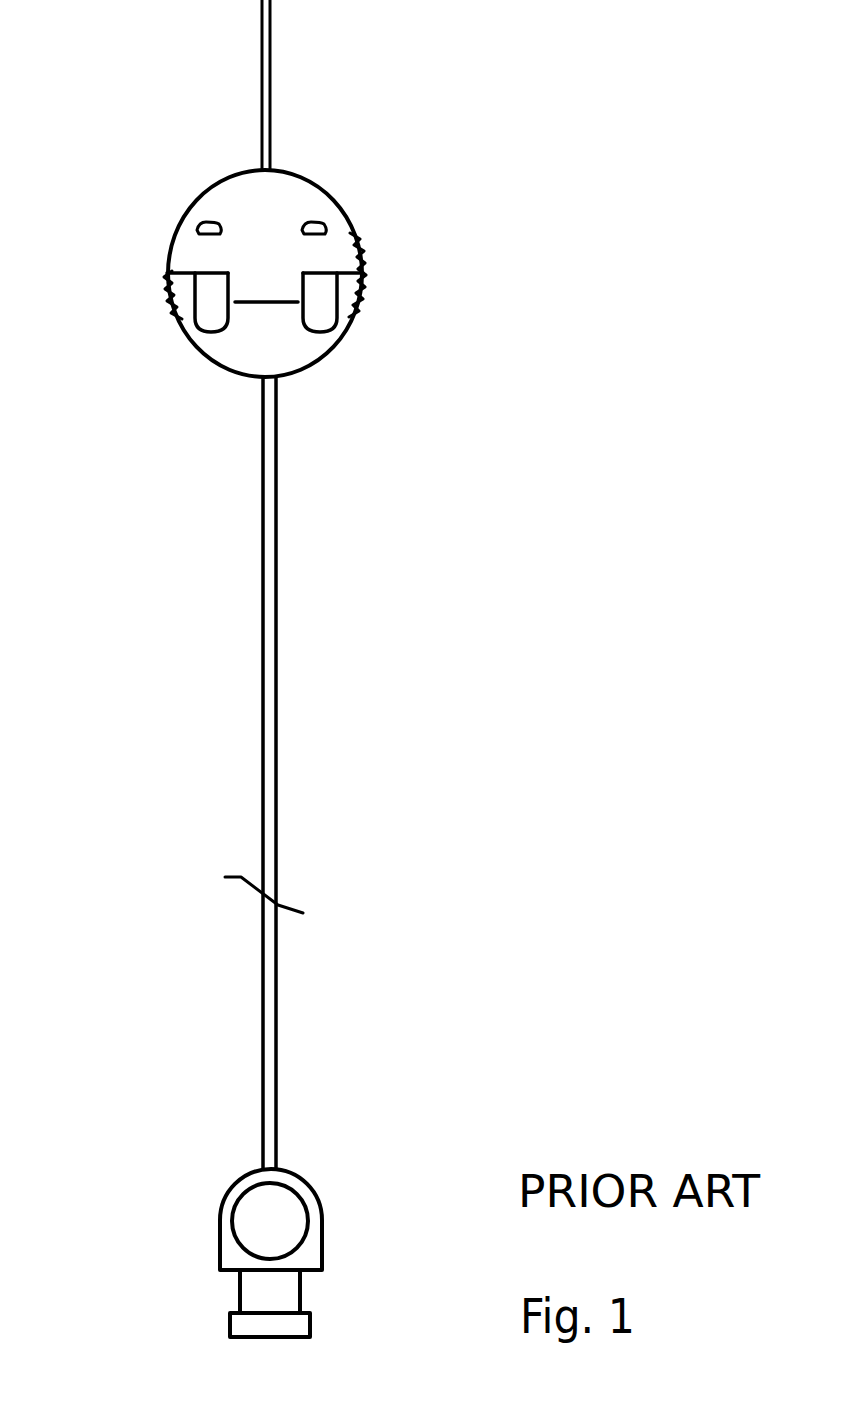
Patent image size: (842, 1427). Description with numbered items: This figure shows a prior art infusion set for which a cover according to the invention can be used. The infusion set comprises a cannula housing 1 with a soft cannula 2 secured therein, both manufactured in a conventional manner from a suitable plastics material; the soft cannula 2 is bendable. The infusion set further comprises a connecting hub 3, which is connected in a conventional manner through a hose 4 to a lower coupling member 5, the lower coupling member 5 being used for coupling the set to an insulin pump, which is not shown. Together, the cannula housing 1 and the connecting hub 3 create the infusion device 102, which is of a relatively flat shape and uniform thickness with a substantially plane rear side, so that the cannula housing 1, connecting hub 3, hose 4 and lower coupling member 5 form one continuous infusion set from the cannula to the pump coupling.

The infusion device 102 is at (132, 182).
The cannula housing 1 is at (304, 305).
The soft cannula 2 is at (270, 105).
The connecting hub 3 is at (292, 352).
The hose 4 is at (270, 570).
The lower coupling member 5 is at (307, 1255).